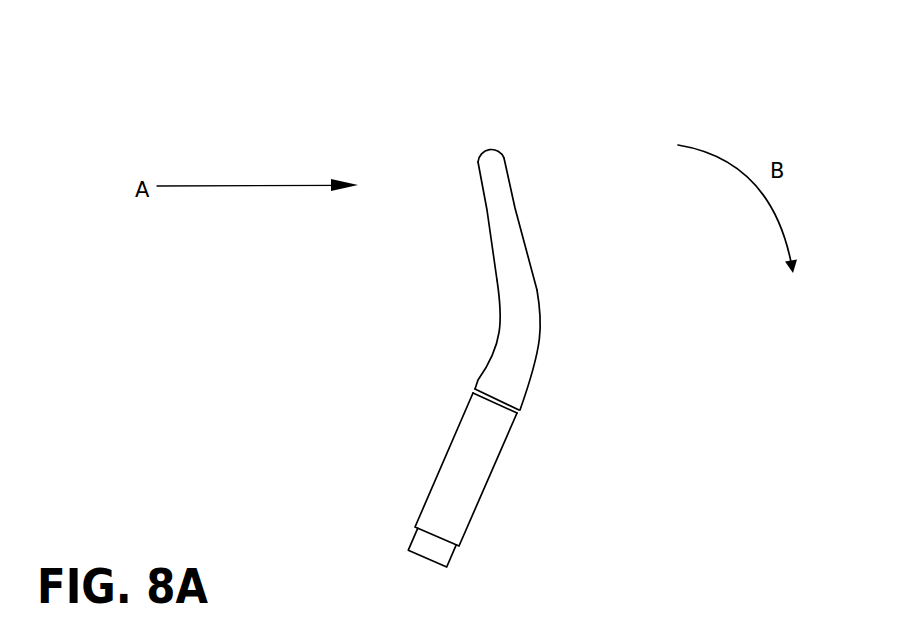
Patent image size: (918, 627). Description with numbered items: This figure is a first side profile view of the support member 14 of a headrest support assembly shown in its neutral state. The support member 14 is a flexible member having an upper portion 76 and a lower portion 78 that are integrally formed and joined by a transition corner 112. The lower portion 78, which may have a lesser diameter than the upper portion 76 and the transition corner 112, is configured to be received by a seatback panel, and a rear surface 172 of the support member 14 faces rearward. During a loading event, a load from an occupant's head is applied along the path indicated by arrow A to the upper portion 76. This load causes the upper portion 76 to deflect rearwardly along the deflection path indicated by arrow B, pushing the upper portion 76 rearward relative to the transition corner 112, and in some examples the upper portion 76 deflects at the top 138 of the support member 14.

The support member 14 is at (527, 152).
The top 138 is at (490, 147).
The upper portion 76 is at (510, 208).
The second transition corner 112 is at (525, 323).
The rear surface 172 is at (515, 390).
The lower portion 78 is at (477, 478).